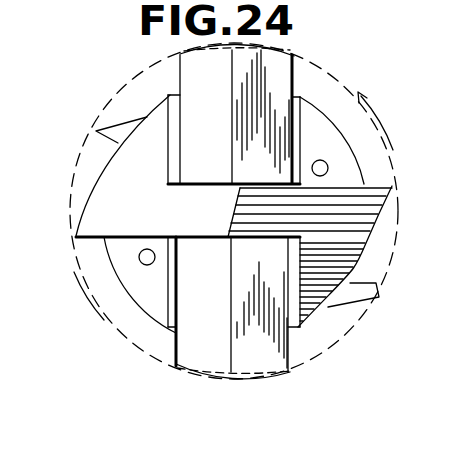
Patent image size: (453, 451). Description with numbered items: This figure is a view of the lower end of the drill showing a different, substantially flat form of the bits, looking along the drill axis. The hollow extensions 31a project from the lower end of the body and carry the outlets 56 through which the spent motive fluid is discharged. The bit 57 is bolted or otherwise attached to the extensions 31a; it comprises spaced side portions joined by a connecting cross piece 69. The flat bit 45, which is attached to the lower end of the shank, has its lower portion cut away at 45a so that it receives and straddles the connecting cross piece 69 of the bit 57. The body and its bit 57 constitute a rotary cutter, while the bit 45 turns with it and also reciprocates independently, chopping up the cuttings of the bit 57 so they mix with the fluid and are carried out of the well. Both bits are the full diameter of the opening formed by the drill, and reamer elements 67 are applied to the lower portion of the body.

The extensions 31a is at (313, 110).
The flat bit 45 is at (183, 71).
The cut-away portion 45a is at (193, 187).
The outlets 56 is at (329, 169).
The bit 57 is at (389, 190).
The reamer elements 67 is at (96, 131).
The connecting cross piece 69 is at (212, 228).